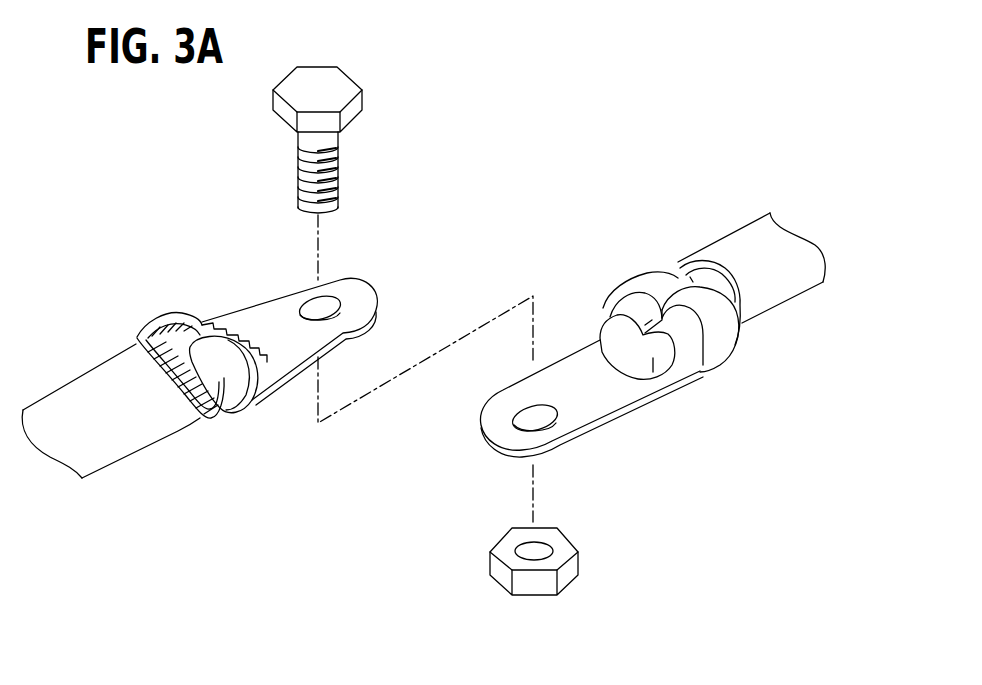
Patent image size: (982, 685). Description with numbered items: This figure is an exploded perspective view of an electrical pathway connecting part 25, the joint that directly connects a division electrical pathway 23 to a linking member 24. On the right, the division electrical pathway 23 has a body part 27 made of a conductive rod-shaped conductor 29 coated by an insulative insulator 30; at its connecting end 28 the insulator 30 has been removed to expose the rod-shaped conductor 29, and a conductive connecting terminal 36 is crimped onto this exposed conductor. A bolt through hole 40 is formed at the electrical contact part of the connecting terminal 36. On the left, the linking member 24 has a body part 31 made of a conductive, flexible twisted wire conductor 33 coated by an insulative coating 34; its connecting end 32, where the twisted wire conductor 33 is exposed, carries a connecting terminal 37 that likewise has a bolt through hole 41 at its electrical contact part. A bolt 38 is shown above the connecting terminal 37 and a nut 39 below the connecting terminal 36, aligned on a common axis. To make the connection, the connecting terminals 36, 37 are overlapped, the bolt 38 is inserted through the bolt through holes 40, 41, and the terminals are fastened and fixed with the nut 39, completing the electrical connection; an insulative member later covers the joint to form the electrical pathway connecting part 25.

The division electrical pathway 23 is at (753, 268).
The linking member 24 is at (111, 424).
The electrical pathway connecting part 25 is at (629, 292).
The body part 27 is at (767, 303).
The connecting end 28 is at (603, 317).
The rod-shaped conductor 29 is at (653, 357).
The insulator 30 is at (783, 250).
The body part 31 is at (90, 446).
The connecting end 32 is at (217, 393).
The twisted wire conductor 33 is at (210, 318).
The coating 34 is at (55, 447).
The connecting terminal 36 is at (567, 401).
The connecting terminal 37 is at (291, 345).
The bolt 38 is at (350, 112).
The nut 39 is at (563, 540).
The bolt through hole 40 is at (523, 405).
The bolt through hole 41 is at (320, 300).